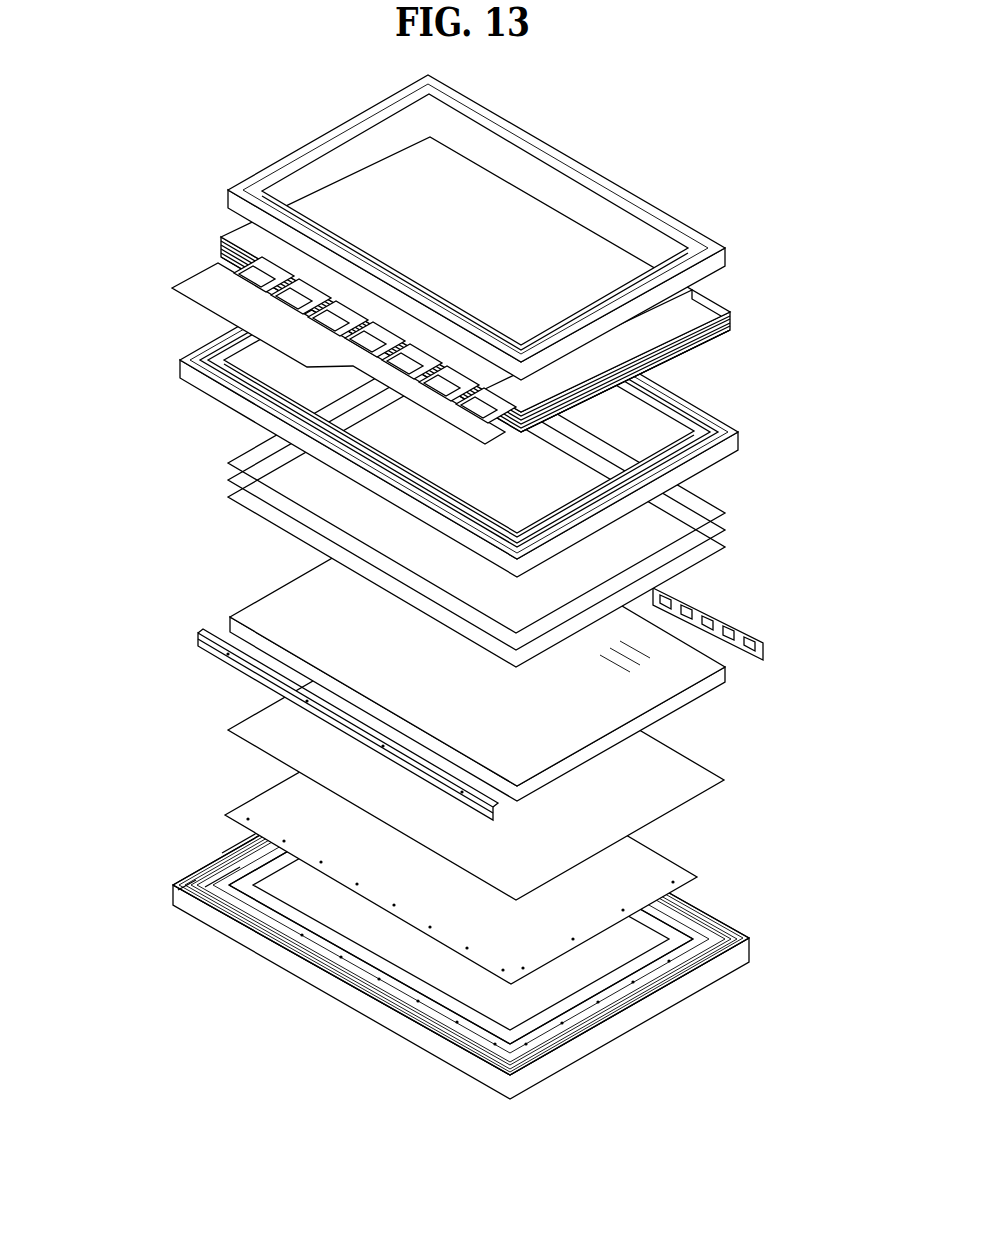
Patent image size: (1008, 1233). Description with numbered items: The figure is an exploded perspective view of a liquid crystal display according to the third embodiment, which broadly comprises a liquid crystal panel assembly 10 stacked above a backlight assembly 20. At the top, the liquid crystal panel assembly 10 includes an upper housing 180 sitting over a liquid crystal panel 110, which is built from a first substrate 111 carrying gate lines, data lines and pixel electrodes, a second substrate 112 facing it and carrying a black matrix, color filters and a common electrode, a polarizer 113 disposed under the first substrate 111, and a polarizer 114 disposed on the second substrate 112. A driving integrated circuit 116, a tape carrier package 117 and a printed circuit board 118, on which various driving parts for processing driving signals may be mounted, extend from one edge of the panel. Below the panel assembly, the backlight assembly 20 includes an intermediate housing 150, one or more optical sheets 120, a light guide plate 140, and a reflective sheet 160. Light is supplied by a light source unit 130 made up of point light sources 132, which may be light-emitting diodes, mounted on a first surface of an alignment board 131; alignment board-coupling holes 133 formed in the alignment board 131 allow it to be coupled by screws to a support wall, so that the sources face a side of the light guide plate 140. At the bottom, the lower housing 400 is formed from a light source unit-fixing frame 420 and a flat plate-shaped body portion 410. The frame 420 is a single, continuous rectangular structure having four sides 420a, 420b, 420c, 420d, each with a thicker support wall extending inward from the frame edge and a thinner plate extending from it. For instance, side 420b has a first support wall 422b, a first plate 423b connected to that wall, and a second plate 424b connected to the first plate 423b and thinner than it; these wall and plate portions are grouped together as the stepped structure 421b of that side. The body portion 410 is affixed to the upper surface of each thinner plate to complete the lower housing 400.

The liquid crystal panel assembly 10 is at (521, 259).
The backlight assembly 20 is at (484, 666).
The liquid crystal panel 110 is at (533, 284).
The first substrate 111 is at (716, 325).
The second substrate 112 is at (712, 312).
The polarizer 113 is at (794, 275).
The polarizer 114 is at (702, 294).
The driving integrated circuit 116 is at (682, 344).
The tape carrier package 117 is at (250, 262).
The printed circuit board 118 is at (205, 286).
The optical sheets 120 is at (216, 458).
The light source unit 130 is at (763, 624).
The alignment board 131 is at (752, 640).
The point light sources 132 is at (742, 614).
The alignment board-coupling holes 133 is at (215, 645).
The light guide plate 140 is at (708, 672).
The intermediate housing 150 is at (501, 405).
The reflective sheet 160 is at (690, 772).
The upper housing 180 is at (702, 232).
The lower housing 400 is at (463, 903).
The body portion 410 is at (690, 842).
The light source unit-fixing frame 420 is at (435, 923).
The side 420a is at (300, 963).
The side 420b is at (235, 850).
The side 420c is at (698, 905).
The side 420d is at (635, 1020).
The coupling portion 421b is at (160, 859).
The first support wall 422b is at (192, 895).
The first plate 423b is at (222, 853).
The second plate 424b is at (205, 887).